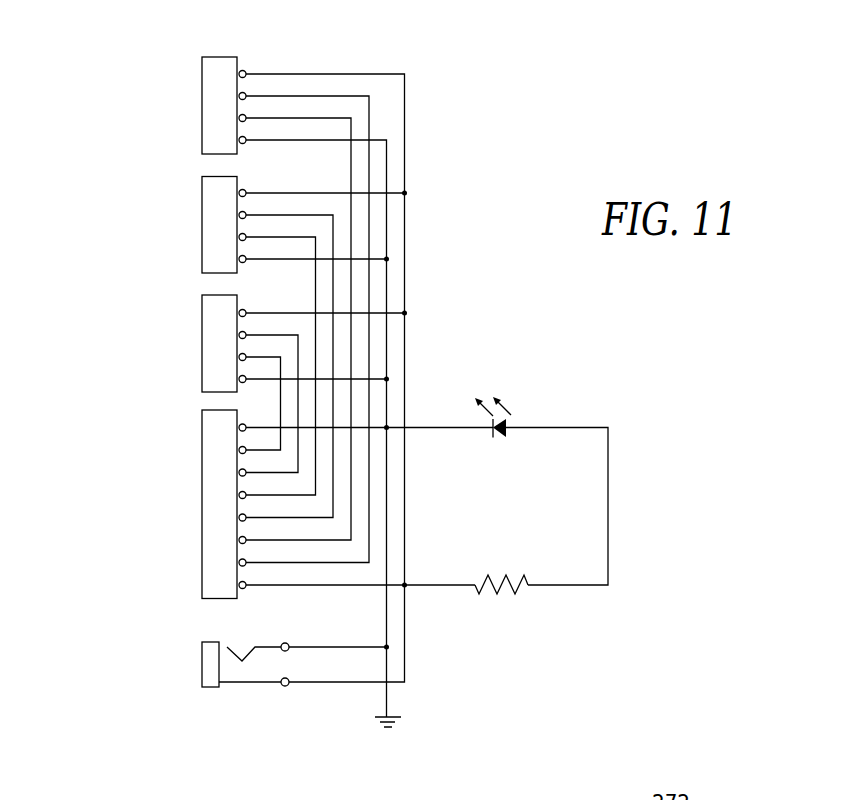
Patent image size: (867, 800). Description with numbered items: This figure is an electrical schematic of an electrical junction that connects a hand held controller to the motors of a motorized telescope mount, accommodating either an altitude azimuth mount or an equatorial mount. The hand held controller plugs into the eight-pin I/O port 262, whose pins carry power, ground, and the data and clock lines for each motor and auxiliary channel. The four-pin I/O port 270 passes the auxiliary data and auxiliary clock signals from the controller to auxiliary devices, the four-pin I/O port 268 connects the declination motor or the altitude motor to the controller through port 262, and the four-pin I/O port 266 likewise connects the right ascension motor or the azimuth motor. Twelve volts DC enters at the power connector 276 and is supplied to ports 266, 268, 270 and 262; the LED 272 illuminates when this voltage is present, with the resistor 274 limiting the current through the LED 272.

The 8-pin RJ-11 I/O port 262 is at (207, 598).
The 4-pin RJ-11 I/O port 266 is at (217, 294).
The 4-pin RJ-11 I/O port 268 is at (215, 177).
The 4-pin RJ-11 I/O port 270 is at (257, 24).
The LED 272 is at (499, 441).
The resistor 274 is at (496, 572).
The power connector 276 is at (207, 688).